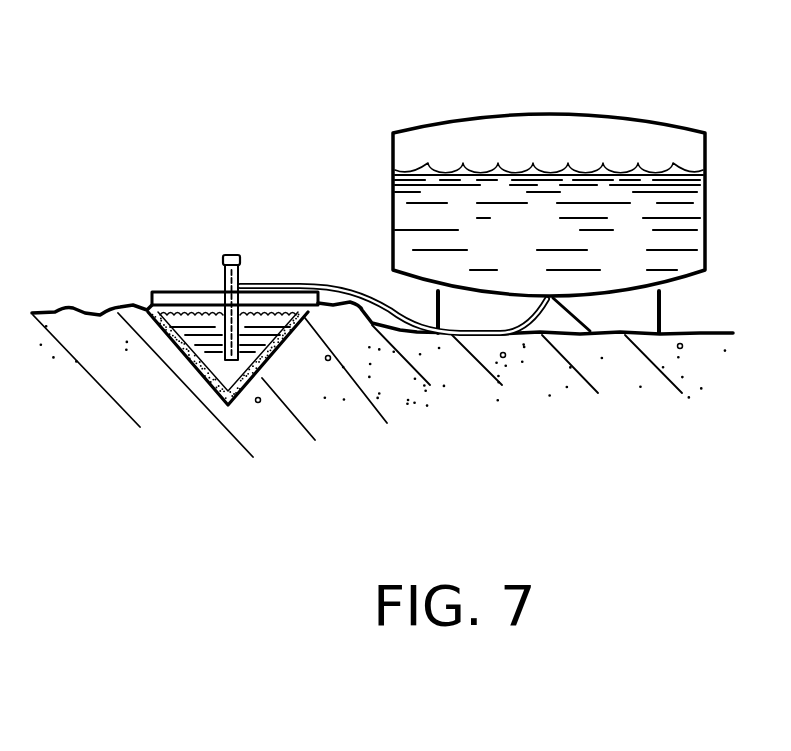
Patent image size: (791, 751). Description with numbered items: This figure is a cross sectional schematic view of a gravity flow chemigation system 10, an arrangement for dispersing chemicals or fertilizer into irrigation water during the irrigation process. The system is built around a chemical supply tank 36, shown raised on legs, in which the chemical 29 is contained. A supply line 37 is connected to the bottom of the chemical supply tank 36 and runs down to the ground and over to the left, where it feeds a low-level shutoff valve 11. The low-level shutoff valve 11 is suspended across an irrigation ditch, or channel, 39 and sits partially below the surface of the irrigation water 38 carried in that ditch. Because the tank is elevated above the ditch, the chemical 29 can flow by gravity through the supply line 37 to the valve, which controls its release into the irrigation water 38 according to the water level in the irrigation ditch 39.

The gravity flow chemigation system 10 is at (312, 43).
The low-level shutoff valve 11 is at (224, 289).
The chemical 29 is at (537, 245).
The chemical supply tank 36 is at (535, 110).
The supply line 37 is at (288, 283).
The irrigation water 38 is at (206, 338).
The irrigation ditch 39 is at (283, 357).